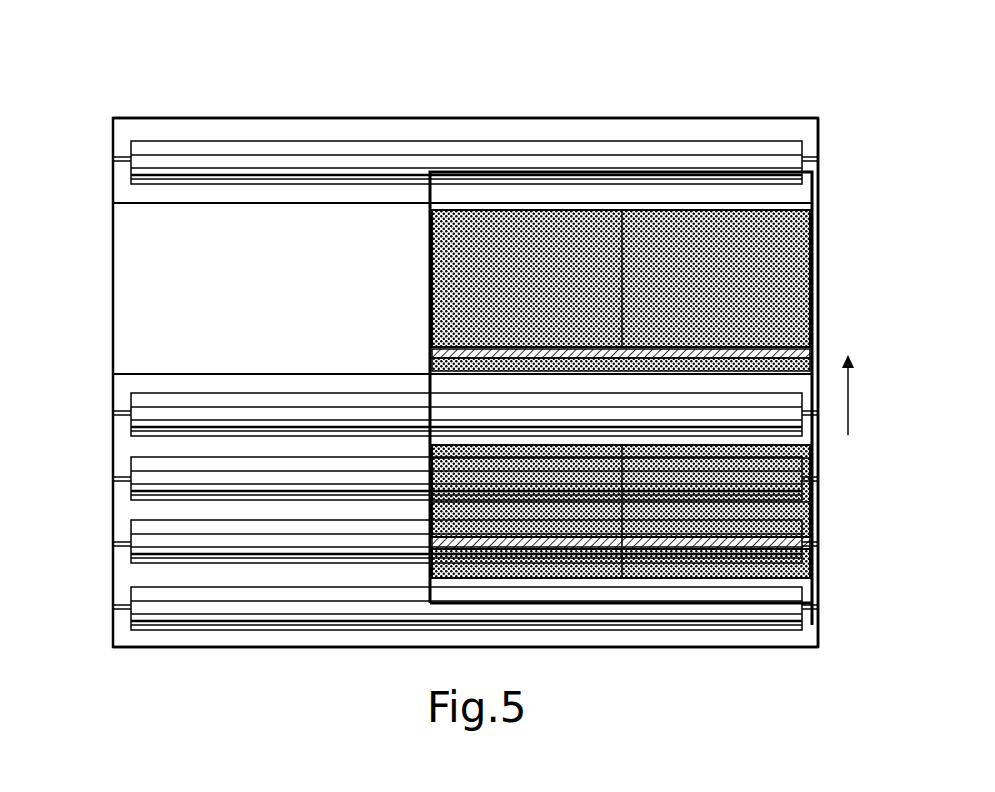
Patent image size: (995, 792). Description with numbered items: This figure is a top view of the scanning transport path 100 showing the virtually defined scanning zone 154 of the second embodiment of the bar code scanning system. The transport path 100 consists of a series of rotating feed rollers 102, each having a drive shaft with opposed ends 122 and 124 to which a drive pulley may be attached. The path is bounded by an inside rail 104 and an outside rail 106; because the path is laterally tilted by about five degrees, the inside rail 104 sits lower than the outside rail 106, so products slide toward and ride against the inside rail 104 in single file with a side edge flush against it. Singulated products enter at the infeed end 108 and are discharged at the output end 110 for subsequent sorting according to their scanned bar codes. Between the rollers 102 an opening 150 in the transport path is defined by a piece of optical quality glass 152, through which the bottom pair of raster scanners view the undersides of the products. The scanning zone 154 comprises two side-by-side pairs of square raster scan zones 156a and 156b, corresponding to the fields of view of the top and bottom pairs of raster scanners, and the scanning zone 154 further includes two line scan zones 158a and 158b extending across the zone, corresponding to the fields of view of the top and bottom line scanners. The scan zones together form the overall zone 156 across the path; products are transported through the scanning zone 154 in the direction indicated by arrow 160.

The scanning transport path 100 is at (343, 660).
The feed roller 102 is at (230, 143).
The inside rail 104 is at (819, 466).
The outside rail 106 is at (123, 411).
The infeed end 108 is at (218, 652).
The output end 110 is at (387, 110).
The drive shaft end 122 is at (113, 605).
The drive shaft end 124 is at (818, 618).
The opening 150 is at (302, 276).
The optical quality glass 152 is at (145, 247).
The scanning zone 154 is at (681, 172).
The sealing material 156 is at (455, 208).
The raster scan zone 156a is at (457, 526).
The raster scan zone 156b is at (458, 236).
The line scan zone 158a is at (822, 352).
The line scan zone 158b is at (777, 549).
The arrow 160 is at (848, 415).